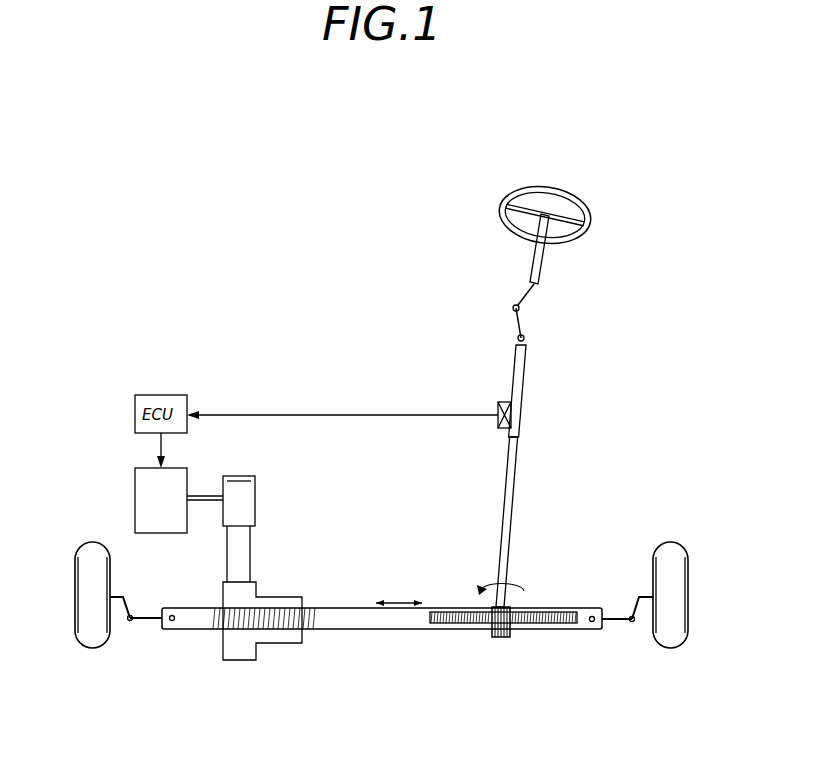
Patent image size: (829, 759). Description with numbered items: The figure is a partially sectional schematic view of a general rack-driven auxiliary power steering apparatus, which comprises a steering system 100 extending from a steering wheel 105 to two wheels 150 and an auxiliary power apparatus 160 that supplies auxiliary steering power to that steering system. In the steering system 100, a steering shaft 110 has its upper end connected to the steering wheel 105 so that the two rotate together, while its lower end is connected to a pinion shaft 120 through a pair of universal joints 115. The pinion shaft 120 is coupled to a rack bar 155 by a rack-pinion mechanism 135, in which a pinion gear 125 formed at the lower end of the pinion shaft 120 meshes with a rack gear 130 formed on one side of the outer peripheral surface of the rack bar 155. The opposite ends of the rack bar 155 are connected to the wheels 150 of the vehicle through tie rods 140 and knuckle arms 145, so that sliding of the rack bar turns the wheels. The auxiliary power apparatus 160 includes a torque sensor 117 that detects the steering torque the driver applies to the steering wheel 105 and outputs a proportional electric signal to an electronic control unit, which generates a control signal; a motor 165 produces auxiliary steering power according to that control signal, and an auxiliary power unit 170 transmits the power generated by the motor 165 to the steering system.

The steering system 100 is at (590, 190).
The steering wheel 105 is at (503, 203).
The steering shaft 110 is at (543, 257).
The universal joints 115 is at (521, 336).
The torque sensor 117 is at (506, 402).
The pinion shaft 120 is at (518, 453).
The pinion gear 125 is at (503, 638).
The rack gear 130 is at (547, 625).
The rack-pinion mechanism 135 is at (552, 693).
The tie rods 140 is at (617, 627).
The knuckle arms 145 is at (633, 610).
The wheels 150 is at (85, 570).
The rack bar 155 is at (392, 625).
The auxiliary power apparatus 160 is at (274, 351).
The motor 165 is at (135, 478).
The auxiliary power unit 170 is at (257, 540).